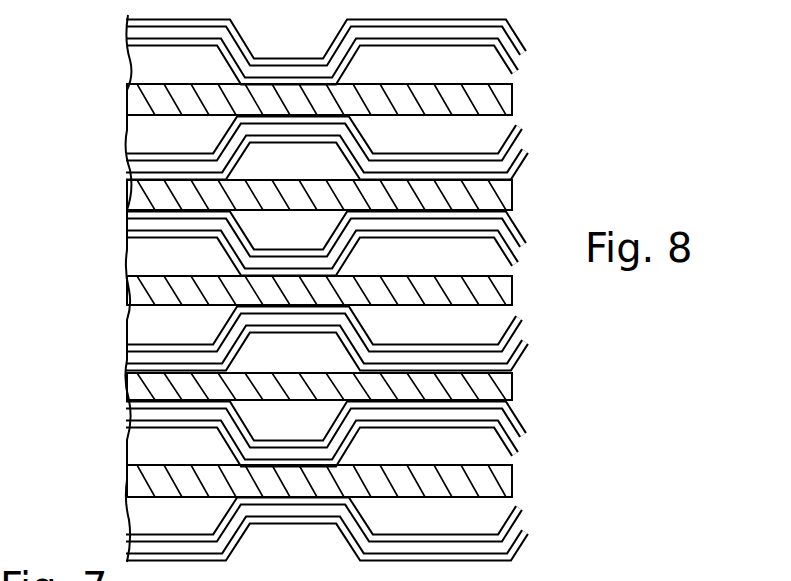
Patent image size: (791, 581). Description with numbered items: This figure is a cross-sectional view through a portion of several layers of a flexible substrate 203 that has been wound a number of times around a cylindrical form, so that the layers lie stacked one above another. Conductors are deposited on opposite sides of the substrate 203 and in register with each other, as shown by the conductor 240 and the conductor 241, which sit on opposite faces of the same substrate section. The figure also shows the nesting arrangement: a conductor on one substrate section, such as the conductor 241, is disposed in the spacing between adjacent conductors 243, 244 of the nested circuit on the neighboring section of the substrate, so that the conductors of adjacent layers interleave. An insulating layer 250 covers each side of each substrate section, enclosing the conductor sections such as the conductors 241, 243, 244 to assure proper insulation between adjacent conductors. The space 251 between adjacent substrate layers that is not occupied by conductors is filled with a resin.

The substrate 203 is at (497, 102).
The conductor 240 is at (500, 193).
The conductor 241 is at (205, 152).
The conductor 243 is at (183, 262).
The conductor 244 is at (433, 268).
The insulating layer 250 is at (163, 237).
The space 251 is at (292, 300).